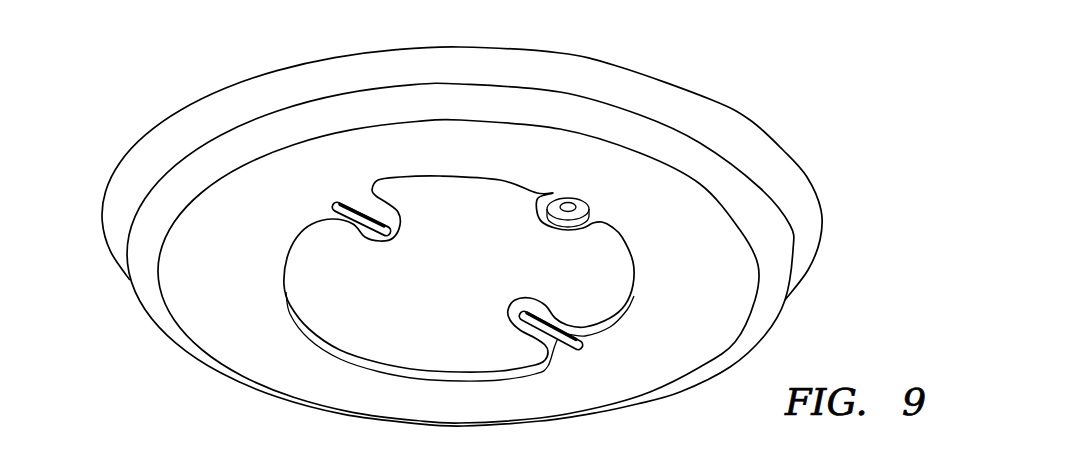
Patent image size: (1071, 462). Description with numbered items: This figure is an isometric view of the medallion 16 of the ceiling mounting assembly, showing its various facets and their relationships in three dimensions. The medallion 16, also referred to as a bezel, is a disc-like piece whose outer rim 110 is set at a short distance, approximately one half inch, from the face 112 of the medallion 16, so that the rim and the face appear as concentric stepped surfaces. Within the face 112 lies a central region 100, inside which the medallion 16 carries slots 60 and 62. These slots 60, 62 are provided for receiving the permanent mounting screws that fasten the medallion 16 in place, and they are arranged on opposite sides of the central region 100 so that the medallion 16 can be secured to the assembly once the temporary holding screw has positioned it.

The medallion 16 is at (806, 106).
The outer rim 110 is at (671, 84).
The face 112 is at (715, 292).
The recess 100 is at (487, 292).
The slot 60 is at (359, 232).
The slot 62 is at (562, 322).